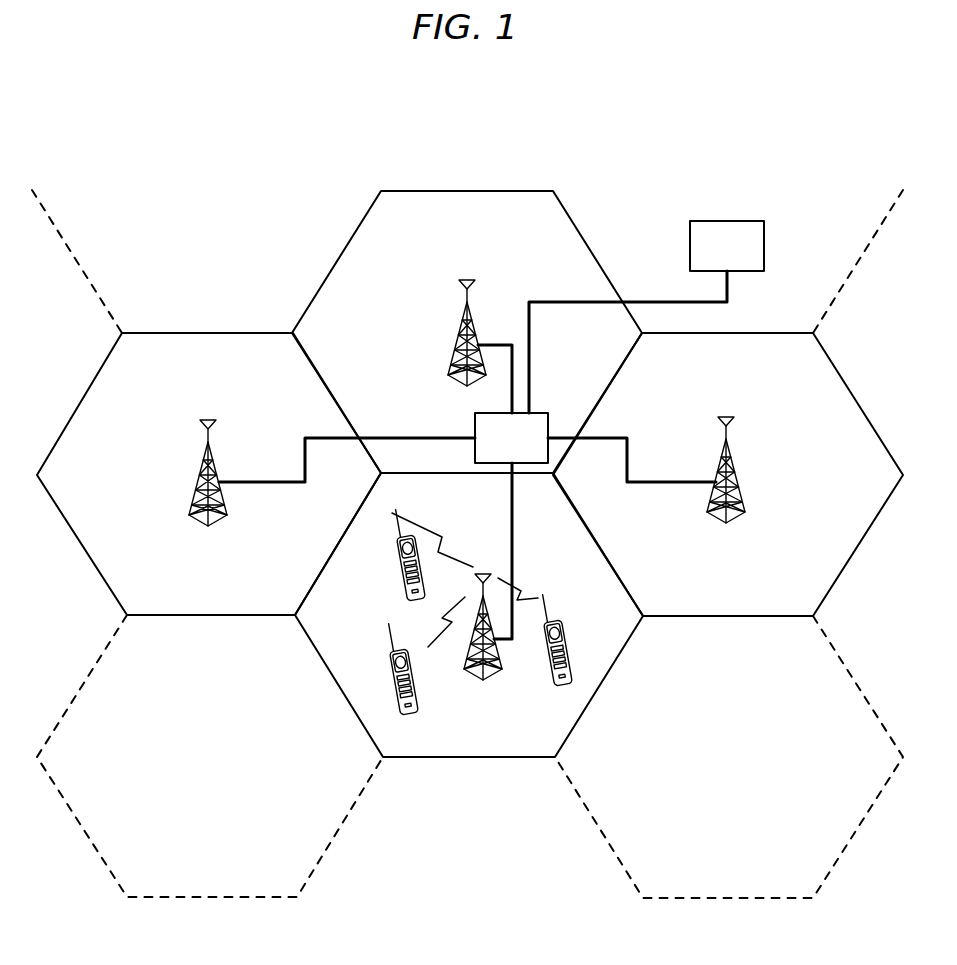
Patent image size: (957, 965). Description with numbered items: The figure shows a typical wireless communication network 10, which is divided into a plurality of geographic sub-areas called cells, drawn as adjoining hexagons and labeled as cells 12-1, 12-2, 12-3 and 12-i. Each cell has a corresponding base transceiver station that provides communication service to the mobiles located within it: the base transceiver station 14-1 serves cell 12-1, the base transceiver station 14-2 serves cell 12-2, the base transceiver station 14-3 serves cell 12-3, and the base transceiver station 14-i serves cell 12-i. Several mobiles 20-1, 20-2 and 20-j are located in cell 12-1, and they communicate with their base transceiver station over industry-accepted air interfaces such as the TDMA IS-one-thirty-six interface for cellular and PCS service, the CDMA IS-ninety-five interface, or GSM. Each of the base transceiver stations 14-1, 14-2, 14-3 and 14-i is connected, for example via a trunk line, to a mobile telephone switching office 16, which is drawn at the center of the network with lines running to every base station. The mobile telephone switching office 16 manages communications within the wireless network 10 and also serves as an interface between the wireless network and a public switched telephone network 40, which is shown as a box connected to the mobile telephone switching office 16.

The wireless network 10 is at (269, 228).
The cell 12-i is at (483, 205).
The cell 12-1 is at (584, 694).
The cell 12-2 is at (172, 602).
The cell 12-3 is at (827, 582).
The base transceiver station 14-i is at (463, 349).
The base transceiver station 14-1 is at (490, 680).
The base transceiver station 14-2 is at (215, 467).
The base transceiver station 14-3 is at (718, 464).
The mobile telephone switching office 16 is at (542, 410).
The mobile 20-1 is at (568, 629).
The mobile 20-2 is at (403, 587).
The mobile 20-j is at (415, 705).
The public switched telephone network 40 is at (765, 243).